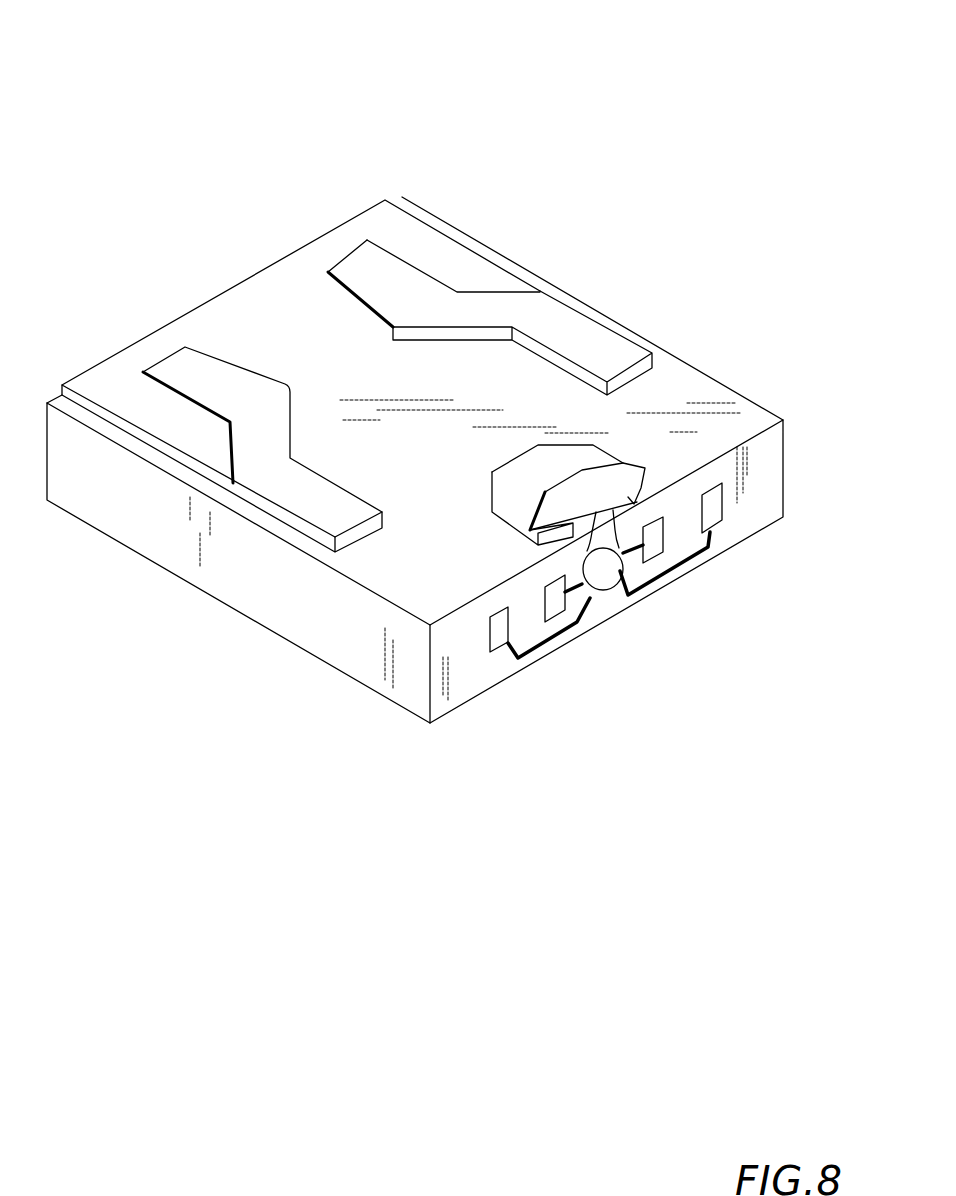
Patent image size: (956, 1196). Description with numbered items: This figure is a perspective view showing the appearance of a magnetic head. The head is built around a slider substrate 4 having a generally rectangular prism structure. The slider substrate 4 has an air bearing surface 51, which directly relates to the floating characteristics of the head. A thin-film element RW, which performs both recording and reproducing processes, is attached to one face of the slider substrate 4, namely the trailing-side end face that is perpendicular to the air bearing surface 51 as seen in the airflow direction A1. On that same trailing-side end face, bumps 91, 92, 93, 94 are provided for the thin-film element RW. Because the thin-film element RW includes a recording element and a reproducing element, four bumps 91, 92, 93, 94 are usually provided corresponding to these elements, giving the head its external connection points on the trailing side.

The airflow direction A1 is at (492, 133).
The slider substrate 4 is at (440, 680).
The air bearing surface 51 is at (344, 517).
The bump 91 is at (505, 634).
The bump 92 is at (552, 612).
The bump 93 is at (654, 546).
The bump 94 is at (712, 518).
The thin-film element RW is at (606, 563).